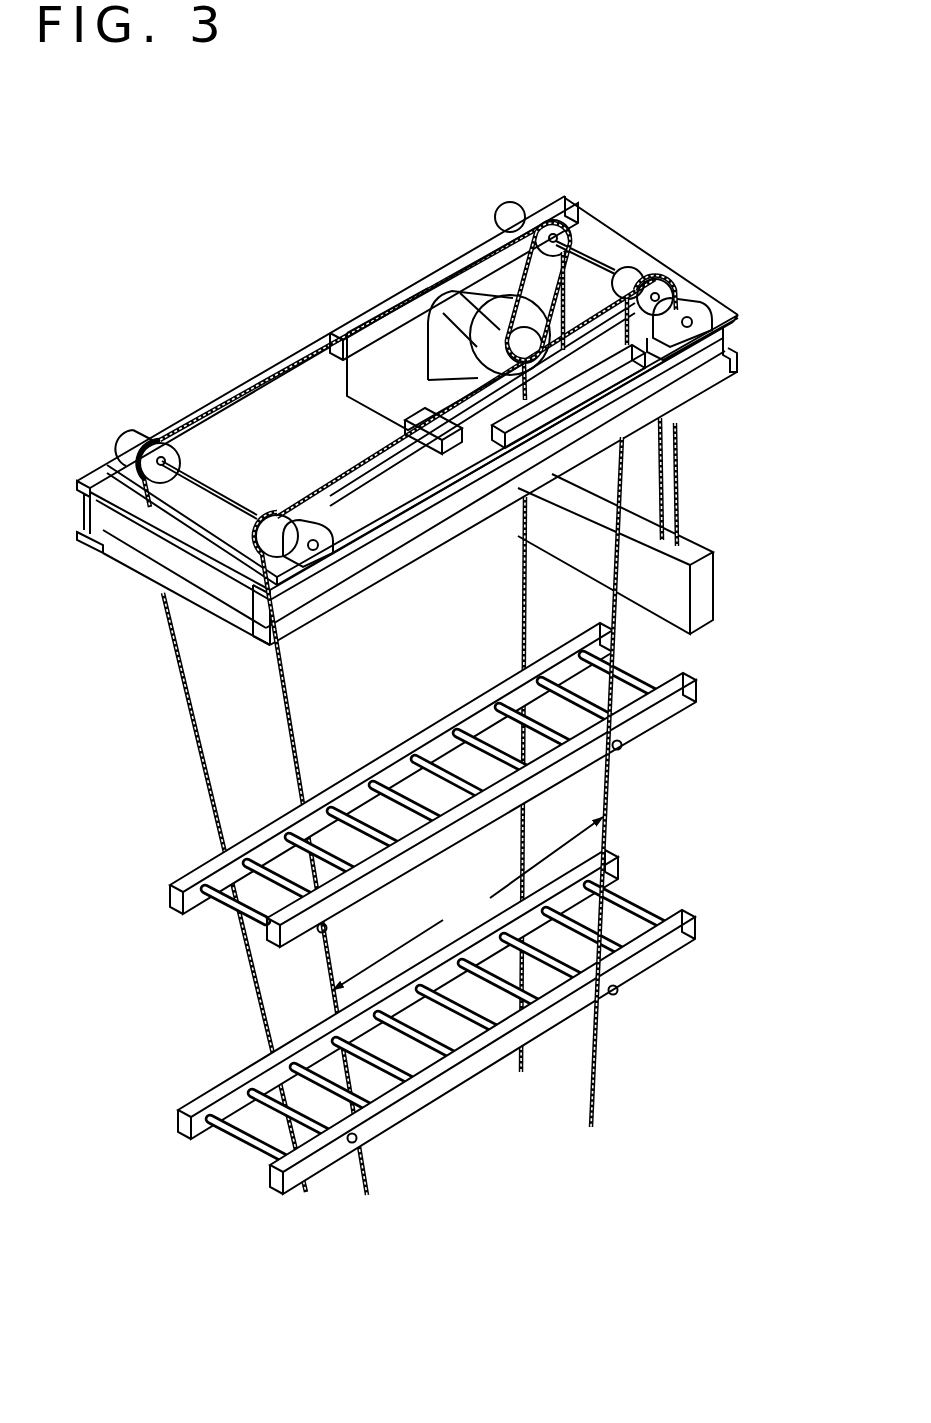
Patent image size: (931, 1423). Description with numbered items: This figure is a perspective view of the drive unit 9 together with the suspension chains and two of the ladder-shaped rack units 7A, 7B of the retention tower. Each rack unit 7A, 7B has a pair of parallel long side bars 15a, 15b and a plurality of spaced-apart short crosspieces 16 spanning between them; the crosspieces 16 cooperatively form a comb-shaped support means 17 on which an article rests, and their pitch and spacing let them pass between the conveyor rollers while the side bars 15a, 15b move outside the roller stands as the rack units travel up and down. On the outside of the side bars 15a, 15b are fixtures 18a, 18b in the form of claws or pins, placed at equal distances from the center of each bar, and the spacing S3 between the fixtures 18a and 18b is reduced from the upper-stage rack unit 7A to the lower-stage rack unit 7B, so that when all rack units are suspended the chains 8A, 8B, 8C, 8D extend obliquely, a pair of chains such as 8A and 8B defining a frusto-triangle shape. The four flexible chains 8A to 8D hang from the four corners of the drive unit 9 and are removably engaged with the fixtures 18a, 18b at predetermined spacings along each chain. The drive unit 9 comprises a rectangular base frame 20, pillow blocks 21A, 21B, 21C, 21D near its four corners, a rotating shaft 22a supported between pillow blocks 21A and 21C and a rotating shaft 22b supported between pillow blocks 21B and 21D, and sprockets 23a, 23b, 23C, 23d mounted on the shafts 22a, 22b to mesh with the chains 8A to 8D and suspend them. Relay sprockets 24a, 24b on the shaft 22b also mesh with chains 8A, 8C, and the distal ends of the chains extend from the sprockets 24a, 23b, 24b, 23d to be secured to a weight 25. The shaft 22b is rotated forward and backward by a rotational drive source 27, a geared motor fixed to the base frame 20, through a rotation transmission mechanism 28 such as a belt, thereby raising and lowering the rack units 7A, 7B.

The drive unit 9 is at (630, 230).
The base frame 20 is at (152, 575).
The pillow block 21A is at (340, 548).
The pillow block 21B is at (720, 305).
The pillow block 21C is at (137, 437).
The pillow block 21D is at (505, 210).
The rotating shaft 22a is at (118, 572).
The rotating shaft 22b is at (580, 252).
The sprocket 23a is at (172, 605).
The sprocket 23b is at (657, 277).
The sprocket 23C is at (138, 466).
The sprocket 23d is at (562, 250).
The relay sprocket 24a is at (672, 284).
The relay sprocket 24b is at (540, 214).
The weight 25 is at (705, 543).
The rotational drive source 27 is at (428, 303).
The rotation transmission mechanism 28 is at (475, 255).
The rack unit 7A is at (702, 680).
The rack unit 7B is at (710, 916).
The chain 8A is at (292, 716).
The chain 8B is at (695, 613).
The chain 8C is at (188, 710).
The chain 8D is at (522, 612).
The side bar 15a is at (262, 955).
The side bar 15b is at (183, 884).
The crosspiece 16 is at (237, 893).
The support means 17 is at (98, 905).
The fixture 18a is at (262, 960).
The fixture 18b is at (623, 742).
The spacing between fixtures S3 is at (468, 903).